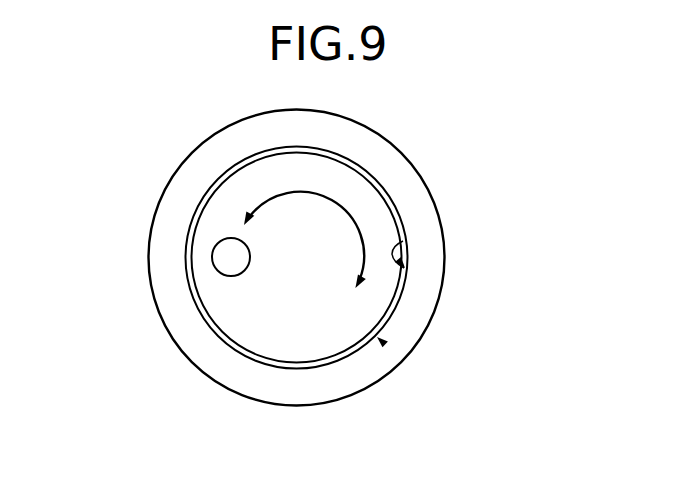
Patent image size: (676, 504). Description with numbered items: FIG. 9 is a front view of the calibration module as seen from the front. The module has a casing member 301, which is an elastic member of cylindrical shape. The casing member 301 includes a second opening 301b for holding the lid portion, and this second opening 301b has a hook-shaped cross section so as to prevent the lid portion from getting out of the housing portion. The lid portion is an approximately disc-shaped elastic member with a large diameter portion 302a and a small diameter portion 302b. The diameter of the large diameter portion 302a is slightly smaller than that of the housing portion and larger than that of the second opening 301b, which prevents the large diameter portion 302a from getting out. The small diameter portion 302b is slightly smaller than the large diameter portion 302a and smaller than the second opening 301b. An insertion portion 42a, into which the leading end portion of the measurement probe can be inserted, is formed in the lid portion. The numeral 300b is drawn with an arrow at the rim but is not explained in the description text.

The casing member 301 is at (425, 288).
The second opening 301b is at (403, 241).
The rotating member edge 300b is at (380, 340).
The large diameter portion 302a is at (205, 193).
The small diameter portion 302b is at (215, 225).
The insertion portion 42a is at (213, 260).